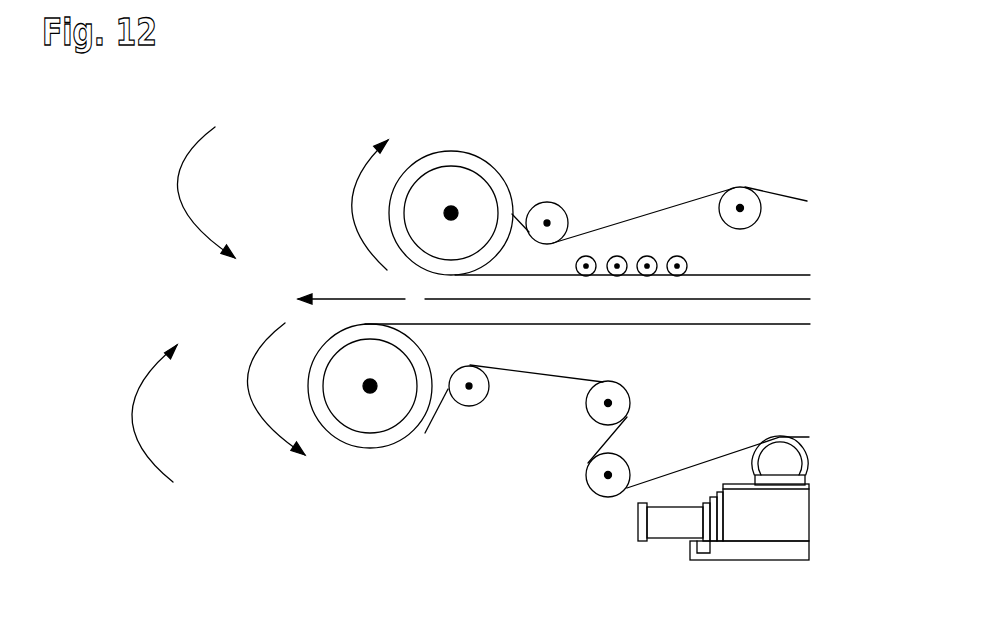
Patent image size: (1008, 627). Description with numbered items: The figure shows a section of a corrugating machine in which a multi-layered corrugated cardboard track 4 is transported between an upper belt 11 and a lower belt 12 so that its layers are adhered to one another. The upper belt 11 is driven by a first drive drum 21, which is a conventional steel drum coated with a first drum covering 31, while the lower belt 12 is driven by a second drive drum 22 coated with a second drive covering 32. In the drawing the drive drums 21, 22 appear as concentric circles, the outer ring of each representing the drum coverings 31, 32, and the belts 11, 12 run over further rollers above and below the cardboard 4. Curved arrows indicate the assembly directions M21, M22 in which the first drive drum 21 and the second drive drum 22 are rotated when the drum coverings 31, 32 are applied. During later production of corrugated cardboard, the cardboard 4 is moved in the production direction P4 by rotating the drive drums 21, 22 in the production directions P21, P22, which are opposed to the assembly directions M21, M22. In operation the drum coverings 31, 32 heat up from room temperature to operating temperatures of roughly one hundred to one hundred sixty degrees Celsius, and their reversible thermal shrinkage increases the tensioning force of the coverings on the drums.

The first drum covering 31 is at (440, 160).
The first drive drum 21 is at (473, 192).
The upper belt 11 is at (668, 206).
The corrugated cardboard 4 is at (795, 299).
The production direction P4 is at (337, 299).
The second drive covering 32 is at (373, 442).
The second drive drum 22 is at (392, 408).
The lower belt 12 is at (692, 468).
The assembly direction M21 is at (177, 198).
The production direction P21 is at (352, 205).
The assembly direction M22 is at (130, 418).
The production direction P22 is at (260, 427).